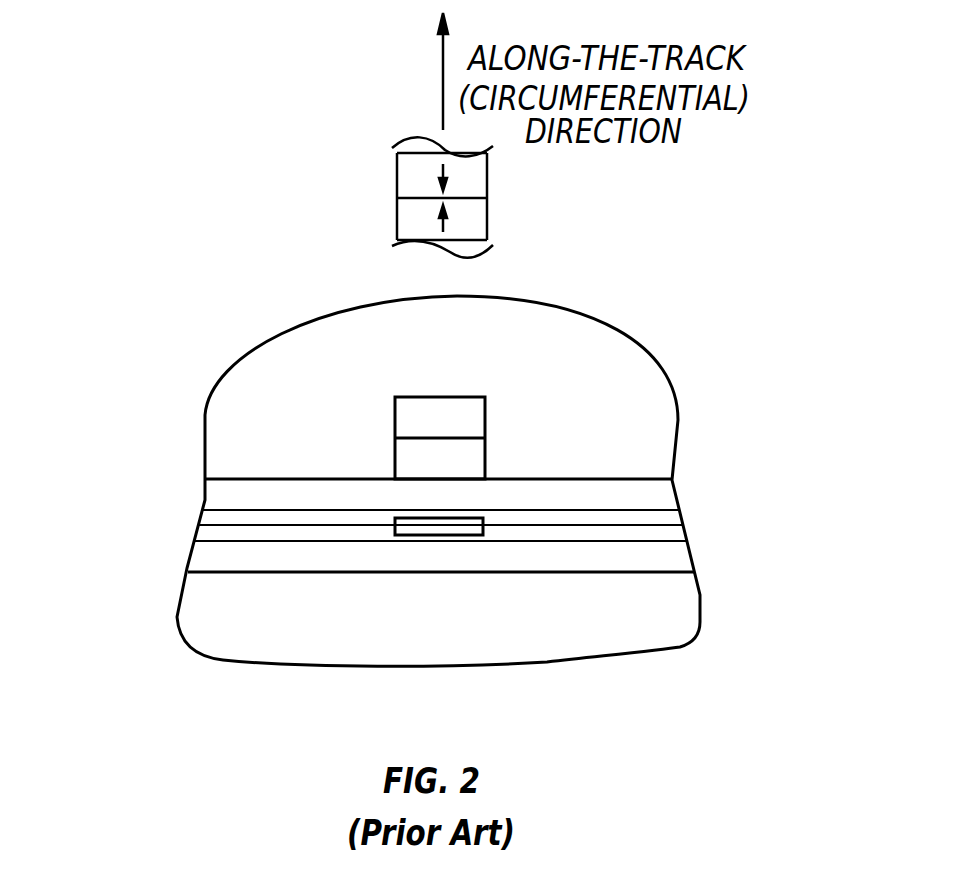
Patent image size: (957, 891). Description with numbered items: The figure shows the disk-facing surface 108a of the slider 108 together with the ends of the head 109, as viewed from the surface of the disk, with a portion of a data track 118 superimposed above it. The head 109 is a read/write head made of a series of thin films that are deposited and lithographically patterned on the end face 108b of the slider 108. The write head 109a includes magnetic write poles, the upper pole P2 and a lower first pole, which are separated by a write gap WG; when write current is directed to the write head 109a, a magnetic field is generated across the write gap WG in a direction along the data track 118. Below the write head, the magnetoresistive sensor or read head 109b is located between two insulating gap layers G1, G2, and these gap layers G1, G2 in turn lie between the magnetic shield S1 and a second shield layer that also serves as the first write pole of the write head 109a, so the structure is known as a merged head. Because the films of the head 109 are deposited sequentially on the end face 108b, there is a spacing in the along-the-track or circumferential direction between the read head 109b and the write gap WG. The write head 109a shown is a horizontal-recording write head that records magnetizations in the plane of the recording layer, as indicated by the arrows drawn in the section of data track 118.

The slider 108 is at (223, 658).
The disk-facing surface 108a is at (352, 442).
The end face 108b is at (200, 567).
The head 109 is at (86, 392).
The write head 109a is at (827, 397).
The read head 109b is at (470, 528).
The data track 118 is at (413, 183).
The write pole P2 is at (477, 418).
The write gap WG is at (477, 462).
The second insulating gap layer G2 is at (660, 517).
The first insulating gap layer G1 is at (670, 535).
The first magnetic shield S1 is at (277, 563).